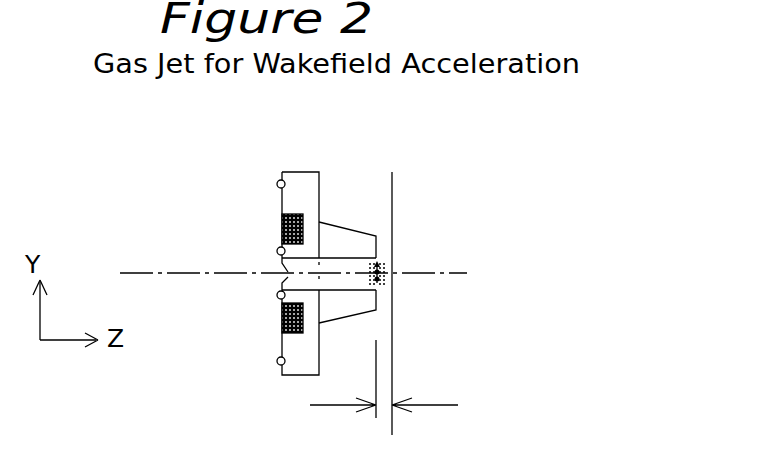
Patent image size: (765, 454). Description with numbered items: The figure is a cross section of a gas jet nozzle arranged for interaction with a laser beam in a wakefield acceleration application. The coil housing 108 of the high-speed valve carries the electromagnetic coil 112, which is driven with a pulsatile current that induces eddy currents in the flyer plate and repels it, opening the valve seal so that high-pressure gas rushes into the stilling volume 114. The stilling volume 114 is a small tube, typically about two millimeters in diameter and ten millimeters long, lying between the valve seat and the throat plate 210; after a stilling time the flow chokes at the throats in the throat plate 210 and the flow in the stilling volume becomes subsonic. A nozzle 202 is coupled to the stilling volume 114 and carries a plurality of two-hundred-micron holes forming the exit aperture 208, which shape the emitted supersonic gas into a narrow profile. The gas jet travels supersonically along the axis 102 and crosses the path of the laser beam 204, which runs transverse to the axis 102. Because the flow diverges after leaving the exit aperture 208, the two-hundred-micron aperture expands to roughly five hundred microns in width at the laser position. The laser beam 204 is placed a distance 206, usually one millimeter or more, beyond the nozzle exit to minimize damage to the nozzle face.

The axis 102 is at (153, 272).
The coil housing 108 is at (313, 172).
The electromagnetic coil 112 is at (282, 318).
The stilling volume 114 is at (290, 277).
The nozzle 202 is at (355, 237).
The laser beam 204 is at (392, 350).
The distance 206 is at (410, 381).
The exit aperture 208 is at (380, 283).
The throat plate 210 is at (319, 265).